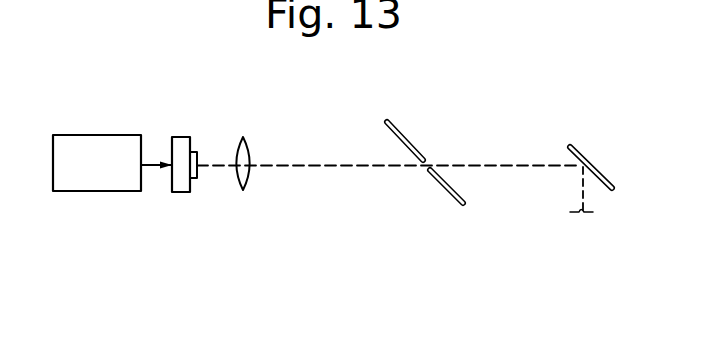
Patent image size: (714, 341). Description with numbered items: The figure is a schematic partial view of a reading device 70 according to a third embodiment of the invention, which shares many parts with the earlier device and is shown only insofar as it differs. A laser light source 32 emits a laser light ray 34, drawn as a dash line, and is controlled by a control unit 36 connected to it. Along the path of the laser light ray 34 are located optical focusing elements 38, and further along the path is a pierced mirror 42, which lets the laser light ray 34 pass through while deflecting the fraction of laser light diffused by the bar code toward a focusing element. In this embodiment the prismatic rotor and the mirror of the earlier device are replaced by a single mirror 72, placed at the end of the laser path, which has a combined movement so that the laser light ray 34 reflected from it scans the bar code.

The laser light source 32 is at (180, 147).
The laser light ray 34 is at (303, 165).
The control unit 36 is at (78, 155).
The optical focusing elements 38 is at (244, 152).
The pierced mirror 42 is at (447, 188).
The reading device 70 is at (488, 126).
The mirror 72 is at (585, 158).